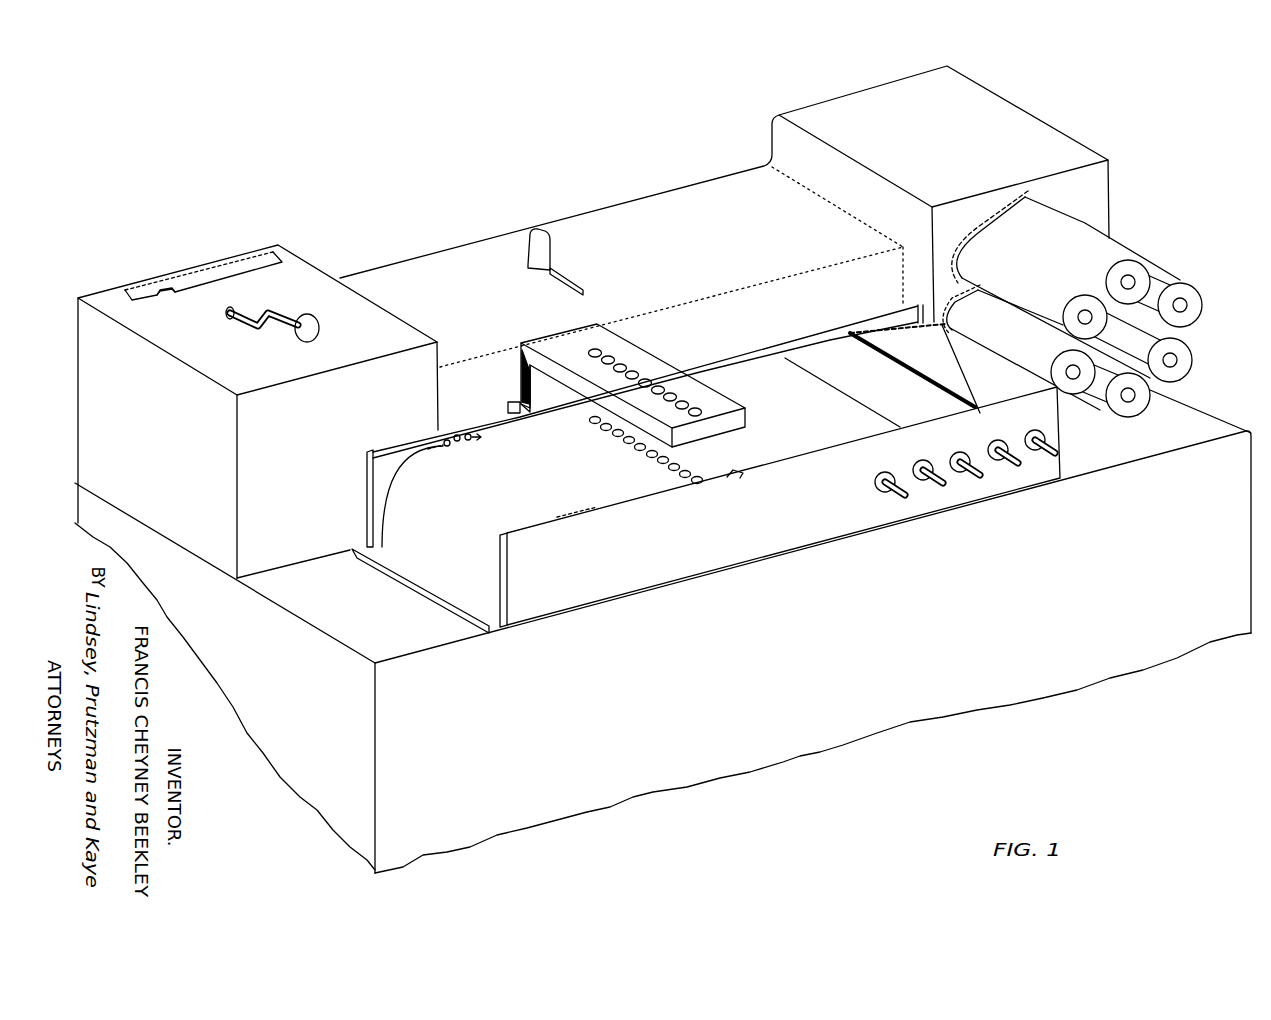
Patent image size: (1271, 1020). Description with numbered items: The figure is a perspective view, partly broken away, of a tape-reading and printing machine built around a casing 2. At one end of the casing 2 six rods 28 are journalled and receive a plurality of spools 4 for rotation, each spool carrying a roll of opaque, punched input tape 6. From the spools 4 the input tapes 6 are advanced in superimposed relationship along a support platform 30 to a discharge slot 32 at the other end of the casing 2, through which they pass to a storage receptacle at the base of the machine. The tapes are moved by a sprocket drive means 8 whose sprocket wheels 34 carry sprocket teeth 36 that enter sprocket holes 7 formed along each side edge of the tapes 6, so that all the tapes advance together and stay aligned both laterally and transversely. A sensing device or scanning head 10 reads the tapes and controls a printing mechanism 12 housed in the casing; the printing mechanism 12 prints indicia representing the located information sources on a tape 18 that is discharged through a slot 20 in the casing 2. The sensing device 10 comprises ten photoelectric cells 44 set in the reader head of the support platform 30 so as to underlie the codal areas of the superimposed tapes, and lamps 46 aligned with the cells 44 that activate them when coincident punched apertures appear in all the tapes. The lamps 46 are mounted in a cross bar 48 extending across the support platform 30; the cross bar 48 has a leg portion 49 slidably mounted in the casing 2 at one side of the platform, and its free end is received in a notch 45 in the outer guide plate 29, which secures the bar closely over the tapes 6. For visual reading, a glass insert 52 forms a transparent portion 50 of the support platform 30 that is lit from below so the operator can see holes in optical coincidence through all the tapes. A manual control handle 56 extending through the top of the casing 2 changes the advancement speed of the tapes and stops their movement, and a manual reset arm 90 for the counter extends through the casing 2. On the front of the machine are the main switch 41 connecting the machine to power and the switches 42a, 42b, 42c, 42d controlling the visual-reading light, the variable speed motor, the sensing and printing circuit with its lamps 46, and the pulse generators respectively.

The casing 2 is at (815, 607).
The spools 4 is at (1177, 287).
The input tape 6 is at (1000, 232).
The sprocket holes 7 is at (868, 323).
The sprocket drive means 8 is at (469, 433).
The sensing device or scanning head 10 is at (590, 423).
The printing mechanism 12 is at (318, 407).
The tape 18 is at (227, 268).
The slot 20 is at (170, 296).
The rods 28 is at (1180, 360).
The outer guide plate 29 is at (807, 343).
The support platform 30 is at (620, 493).
The discharge slot 32 is at (425, 596).
The sprocket wheels 34 is at (458, 442).
The sprocket teeth 36 is at (447, 440).
The main switch 41 is at (883, 494).
The switch 42a is at (923, 482).
The switch 42b is at (960, 474).
The switch 42c is at (998, 462).
The switch 42d is at (1035, 452).
The photoelectric cells 44 is at (678, 468).
The notch 45 is at (736, 479).
The lamps 46 is at (672, 399).
The cross bar 48 is at (622, 342).
The leg portion 49 is at (521, 378).
The transparent portion 50 is at (837, 390).
The glass insert 52 is at (802, 378).
The manual control handle 56 is at (528, 252).
The manual reset arm 90 is at (284, 318).